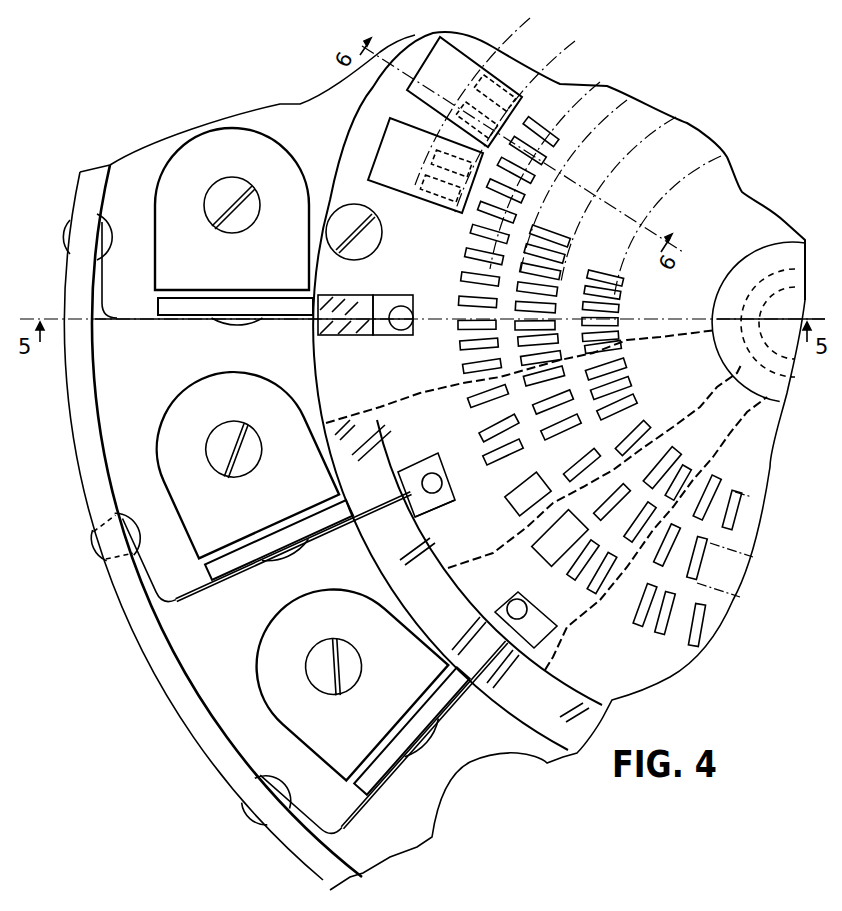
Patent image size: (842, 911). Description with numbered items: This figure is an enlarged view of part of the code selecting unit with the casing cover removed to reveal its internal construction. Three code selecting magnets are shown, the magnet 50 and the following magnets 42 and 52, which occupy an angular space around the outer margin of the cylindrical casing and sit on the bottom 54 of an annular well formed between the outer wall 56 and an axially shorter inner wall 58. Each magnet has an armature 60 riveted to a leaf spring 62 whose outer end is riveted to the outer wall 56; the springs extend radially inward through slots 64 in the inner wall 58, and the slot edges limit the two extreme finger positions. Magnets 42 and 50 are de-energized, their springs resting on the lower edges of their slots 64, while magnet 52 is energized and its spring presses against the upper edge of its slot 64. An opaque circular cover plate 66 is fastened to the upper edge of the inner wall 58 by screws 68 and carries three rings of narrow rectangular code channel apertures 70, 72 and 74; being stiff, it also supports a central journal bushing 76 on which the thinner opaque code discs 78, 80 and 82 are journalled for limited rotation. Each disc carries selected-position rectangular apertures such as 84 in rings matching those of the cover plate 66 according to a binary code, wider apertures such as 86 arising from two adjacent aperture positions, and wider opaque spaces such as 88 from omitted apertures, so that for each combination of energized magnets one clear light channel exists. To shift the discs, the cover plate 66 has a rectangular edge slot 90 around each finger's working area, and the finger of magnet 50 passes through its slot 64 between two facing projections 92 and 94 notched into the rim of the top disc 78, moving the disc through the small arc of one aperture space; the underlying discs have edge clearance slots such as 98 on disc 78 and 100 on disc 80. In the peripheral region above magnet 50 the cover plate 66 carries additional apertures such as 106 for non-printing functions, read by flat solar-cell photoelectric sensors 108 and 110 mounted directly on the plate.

The code selecting magnet 42 is at (245, 520).
The code selecting magnet 50 is at (284, 266).
The code selecting magnet 52 is at (355, 756).
The bottom of annular well 54 is at (153, 366).
The outer wall 56 is at (155, 629).
The inner wall 58 is at (373, 422).
The armature 60 is at (281, 313).
The leaf spring 62 is at (142, 318).
The slot 64 is at (342, 303).
The cover plate 66 is at (440, 376).
The screw 68 is at (382, 230).
The code channel defining aperture ring 70 is at (577, 85).
The code channel defining aperture ring 72 is at (641, 111).
The code channel defining aperture ring 74 is at (700, 146).
The central journal bushing 76 is at (786, 270).
The code disc 78 is at (514, 536).
The code disc 80 is at (530, 577).
The code disc 82 is at (625, 669).
The rectangular aperture 84 is at (563, 436).
The wider aperture 86 is at (530, 490).
The wider non-apertured space 88 is at (482, 418).
The rectangular edge slot 90 is at (393, 293).
The projection 92 is at (428, 476).
The projection 94 is at (444, 486).
The edge clearance slot 98 is at (432, 512).
The edge clearance slot 100 is at (541, 617).
The additional aperture 106 is at (477, 80).
The photoelectric sensor 108 is at (425, 165).
The photoelectric sensor 110 is at (443, 45).